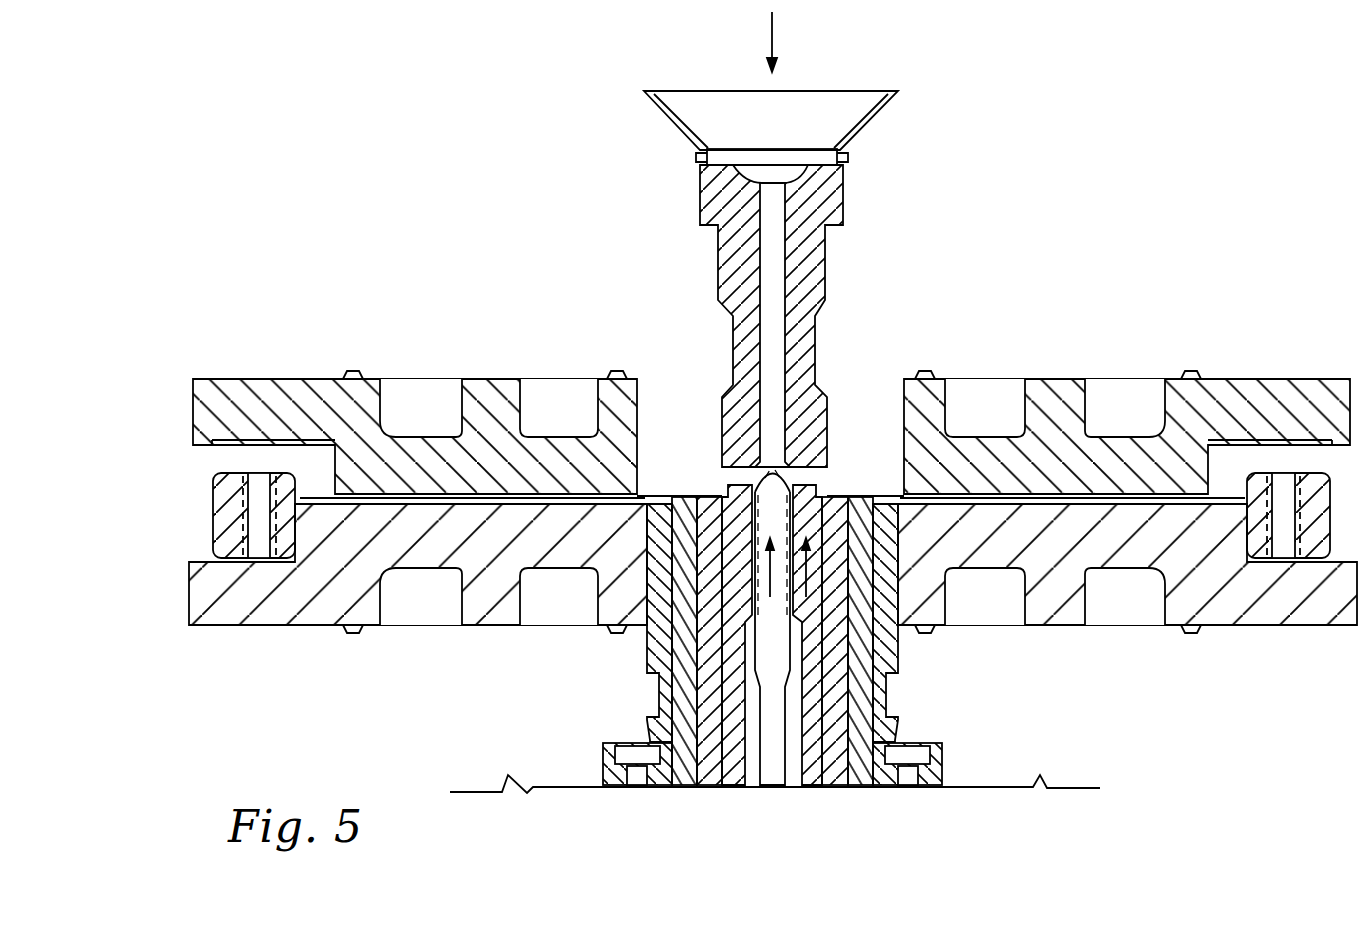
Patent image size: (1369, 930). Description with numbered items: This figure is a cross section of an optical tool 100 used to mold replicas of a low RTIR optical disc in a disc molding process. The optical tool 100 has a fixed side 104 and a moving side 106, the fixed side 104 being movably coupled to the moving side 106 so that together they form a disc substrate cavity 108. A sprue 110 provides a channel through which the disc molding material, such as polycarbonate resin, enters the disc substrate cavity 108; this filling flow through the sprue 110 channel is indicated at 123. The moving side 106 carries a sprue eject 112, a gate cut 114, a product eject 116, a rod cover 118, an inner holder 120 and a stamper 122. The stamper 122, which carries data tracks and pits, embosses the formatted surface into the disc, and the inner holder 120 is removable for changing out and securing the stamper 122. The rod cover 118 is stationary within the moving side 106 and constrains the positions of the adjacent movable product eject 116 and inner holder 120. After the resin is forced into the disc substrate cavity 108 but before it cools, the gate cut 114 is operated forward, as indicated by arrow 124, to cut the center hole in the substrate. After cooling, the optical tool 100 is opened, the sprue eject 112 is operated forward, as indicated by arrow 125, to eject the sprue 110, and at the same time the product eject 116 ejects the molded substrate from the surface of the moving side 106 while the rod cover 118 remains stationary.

The optical tool 100 is at (518, 182).
The fixed side 104 is at (1133, 330).
The moving side 106 is at (1169, 703).
The disc substrate cavity 108 is at (1065, 493).
The sprue 110 is at (825, 265).
The sprue eject 112 is at (770, 786).
The gate cut 114 is at (732, 786).
The product eject 116 is at (705, 786).
The rod cover 118 is at (667, 780).
The inner holder 120 is at (640, 722).
The stamper 122 is at (495, 605).
The sprue channel flow 123 is at (772, 30).
The arrow indicating gate cut movement 124 is at (820, 553).
The arrow indicating sprue eject movement 125 is at (753, 557).